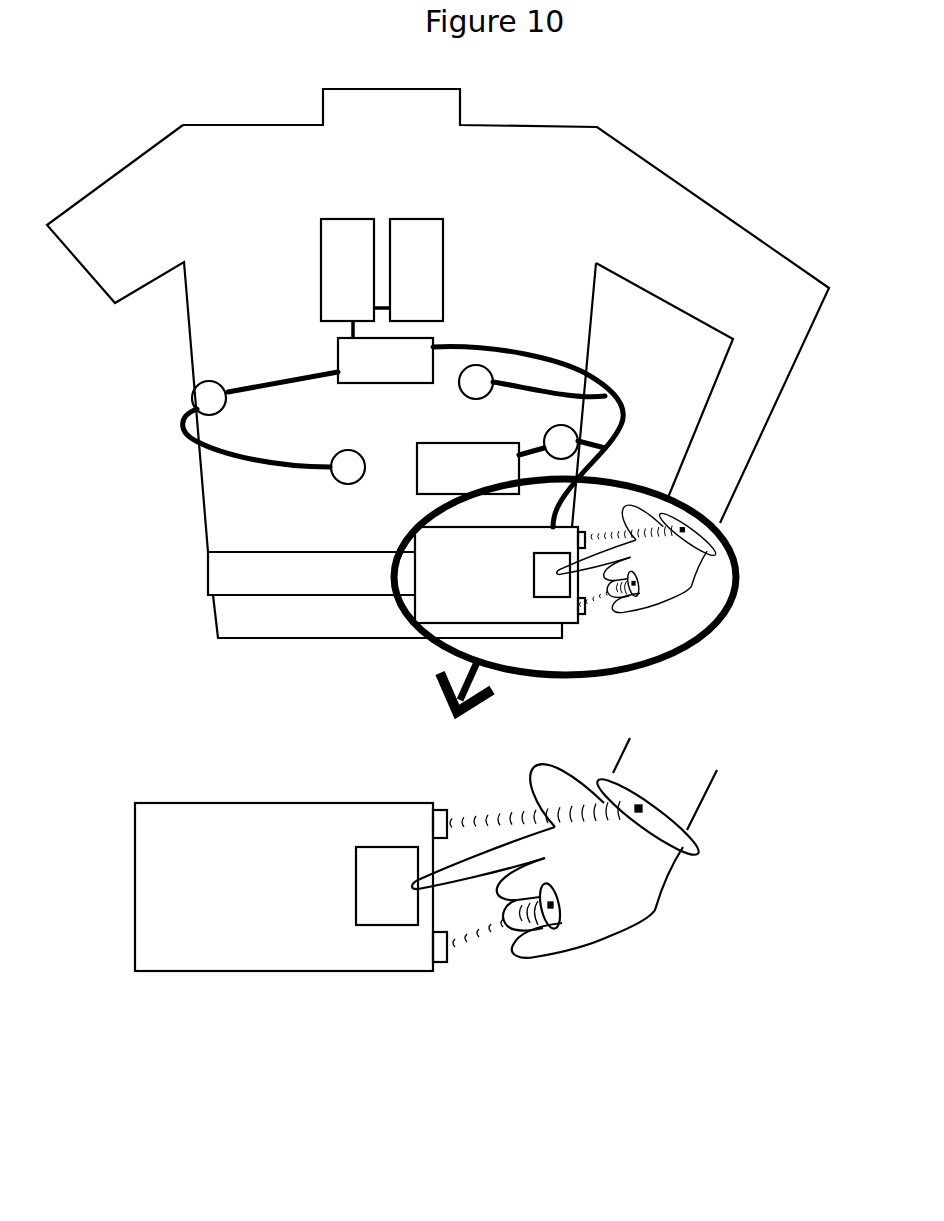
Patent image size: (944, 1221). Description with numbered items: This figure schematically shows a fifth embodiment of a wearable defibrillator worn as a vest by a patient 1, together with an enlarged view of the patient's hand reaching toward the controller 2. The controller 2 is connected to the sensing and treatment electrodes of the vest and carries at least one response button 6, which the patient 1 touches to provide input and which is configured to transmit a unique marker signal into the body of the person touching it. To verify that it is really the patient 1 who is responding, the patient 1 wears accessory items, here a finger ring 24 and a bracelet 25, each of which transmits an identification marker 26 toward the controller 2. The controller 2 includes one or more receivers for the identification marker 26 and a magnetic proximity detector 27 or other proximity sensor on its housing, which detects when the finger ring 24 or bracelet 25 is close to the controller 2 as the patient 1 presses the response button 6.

The patient 1 is at (705, 800).
The controller 2 is at (293, 955).
The response button 6 is at (388, 927).
The finger ring 24 is at (558, 913).
The bracelet 25 is at (690, 848).
The identification marker 26 is at (638, 810).
The magnetic proximity detector 27 is at (447, 810).